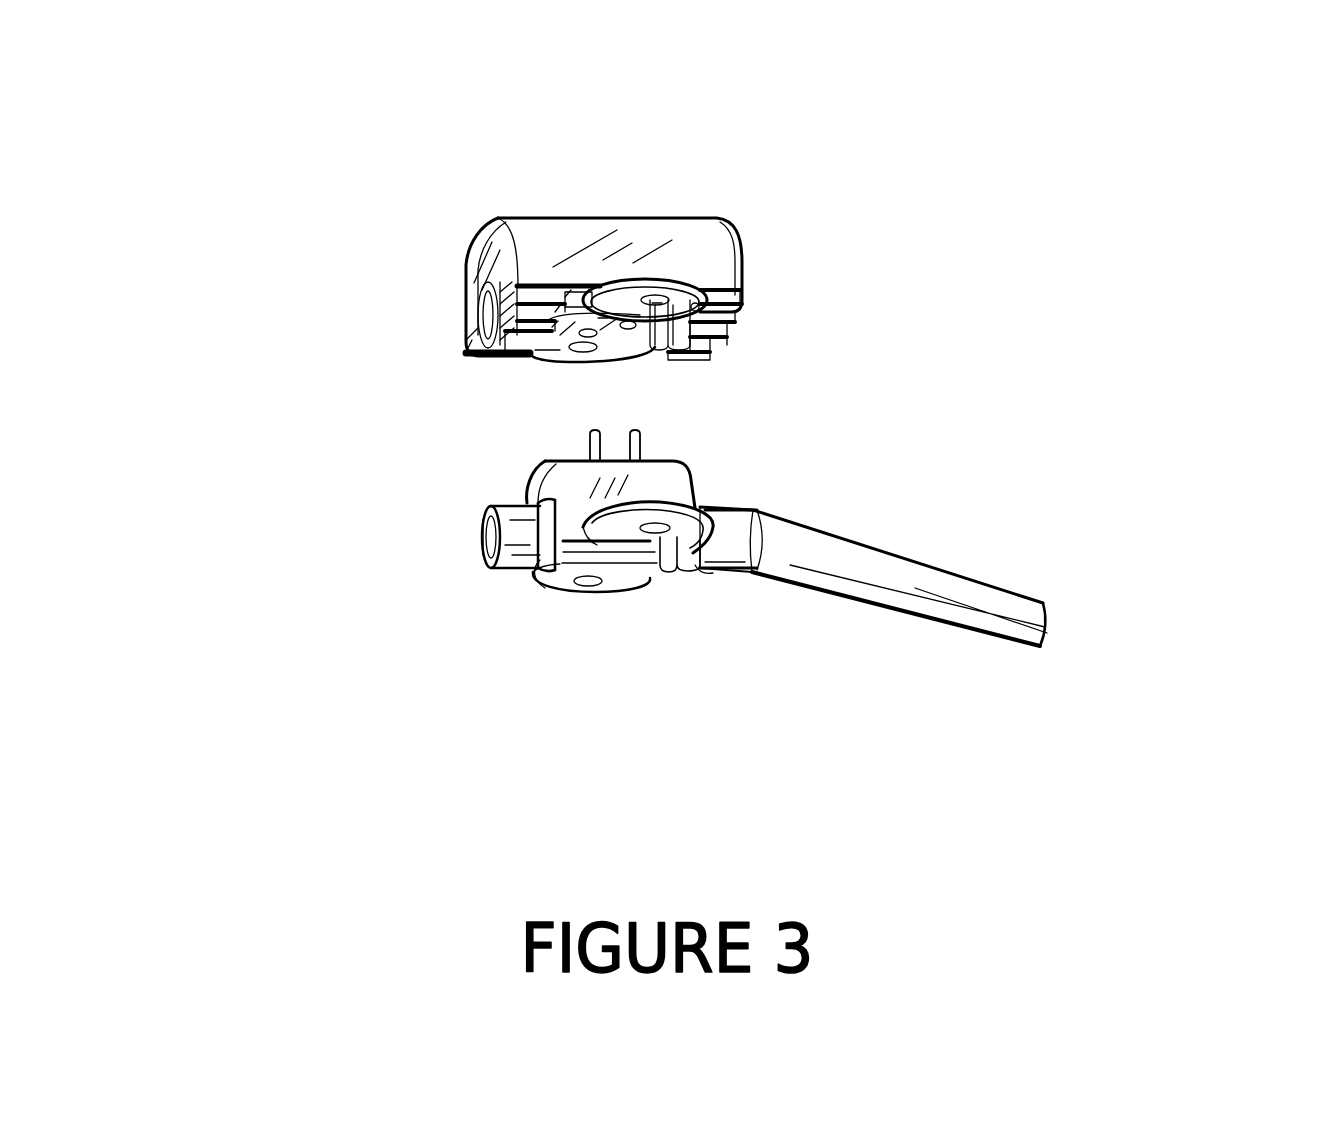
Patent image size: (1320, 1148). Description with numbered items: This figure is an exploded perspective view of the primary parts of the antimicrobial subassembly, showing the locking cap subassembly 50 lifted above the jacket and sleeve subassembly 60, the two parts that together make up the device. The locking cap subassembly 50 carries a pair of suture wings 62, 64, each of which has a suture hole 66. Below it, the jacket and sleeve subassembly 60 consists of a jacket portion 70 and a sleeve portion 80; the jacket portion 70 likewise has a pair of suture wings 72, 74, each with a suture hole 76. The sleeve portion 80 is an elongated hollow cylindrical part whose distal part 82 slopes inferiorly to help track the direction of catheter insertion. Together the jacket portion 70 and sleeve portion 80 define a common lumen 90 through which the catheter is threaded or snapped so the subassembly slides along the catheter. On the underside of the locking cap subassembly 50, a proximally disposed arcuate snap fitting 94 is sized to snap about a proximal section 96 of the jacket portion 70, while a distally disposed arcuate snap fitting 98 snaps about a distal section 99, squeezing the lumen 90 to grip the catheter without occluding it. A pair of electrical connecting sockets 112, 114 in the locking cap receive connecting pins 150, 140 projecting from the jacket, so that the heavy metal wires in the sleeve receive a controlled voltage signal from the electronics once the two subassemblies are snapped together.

The locking cap subassembly 50 is at (716, 218).
The jacket and sleeve subassembly 60 is at (824, 529).
The suture wing 62 is at (740, 250).
The suture wing 64 is at (627, 343).
The suture hole 66 is at (600, 353).
The jacket portion 70 is at (637, 588).
The suture wing 72 is at (740, 507).
The suture wing 74 is at (555, 585).
The suture hole 76 is at (587, 587).
The sleeve portion 80 is at (877, 607).
The distal part 82 is at (937, 567).
The common lumen 90 is at (483, 533).
The arcuate snap fitting 94 is at (467, 327).
The proximal section 96 is at (513, 507).
The arcuate snap fitting 98 is at (745, 295).
The distal section 99 is at (713, 580).
The electrical connecting socket 112 is at (603, 337).
The electrical connecting socket 114 is at (657, 303).
The connecting pin 140 is at (646, 437).
The connecting pin 150 is at (603, 430).